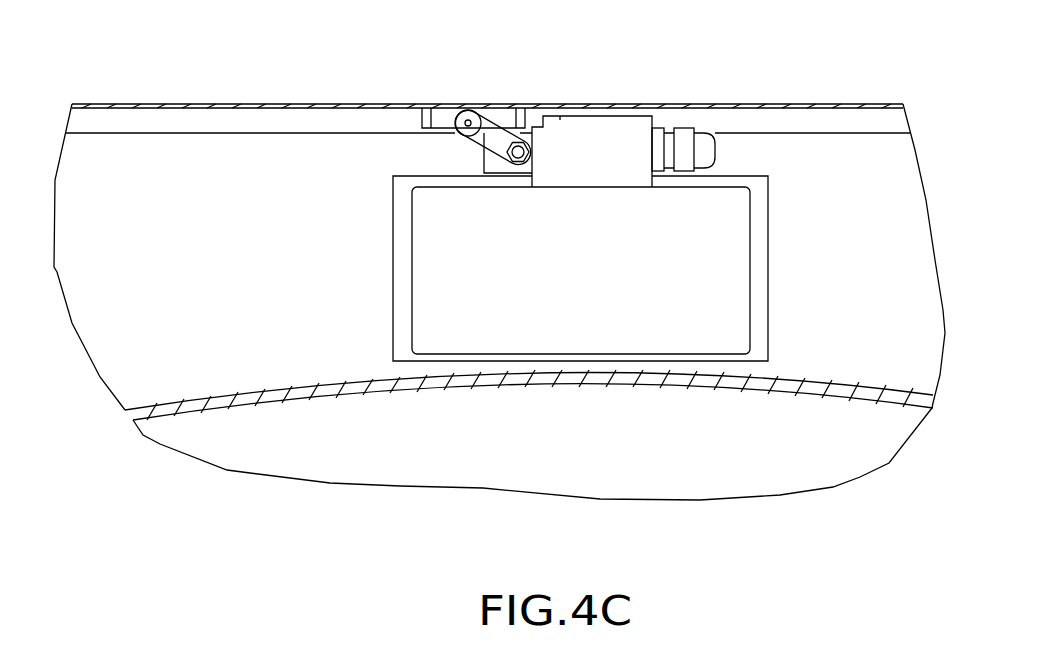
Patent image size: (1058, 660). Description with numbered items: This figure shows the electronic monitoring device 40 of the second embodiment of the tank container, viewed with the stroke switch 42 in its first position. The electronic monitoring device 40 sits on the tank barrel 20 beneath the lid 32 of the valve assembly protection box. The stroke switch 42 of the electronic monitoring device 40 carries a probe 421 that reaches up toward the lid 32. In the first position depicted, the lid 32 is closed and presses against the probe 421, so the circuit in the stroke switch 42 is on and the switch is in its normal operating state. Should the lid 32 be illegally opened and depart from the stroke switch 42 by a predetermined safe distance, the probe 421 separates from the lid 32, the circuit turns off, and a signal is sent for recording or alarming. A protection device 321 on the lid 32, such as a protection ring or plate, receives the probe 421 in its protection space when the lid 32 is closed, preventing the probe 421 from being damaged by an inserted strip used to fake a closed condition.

The tank barrel 20 is at (383, 460).
The lid 32 is at (208, 105).
The protection device 321 is at (518, 107).
The electronic monitoring device 40 is at (430, 250).
The stroke switch 42 is at (585, 116).
The probe 421 is at (490, 133).